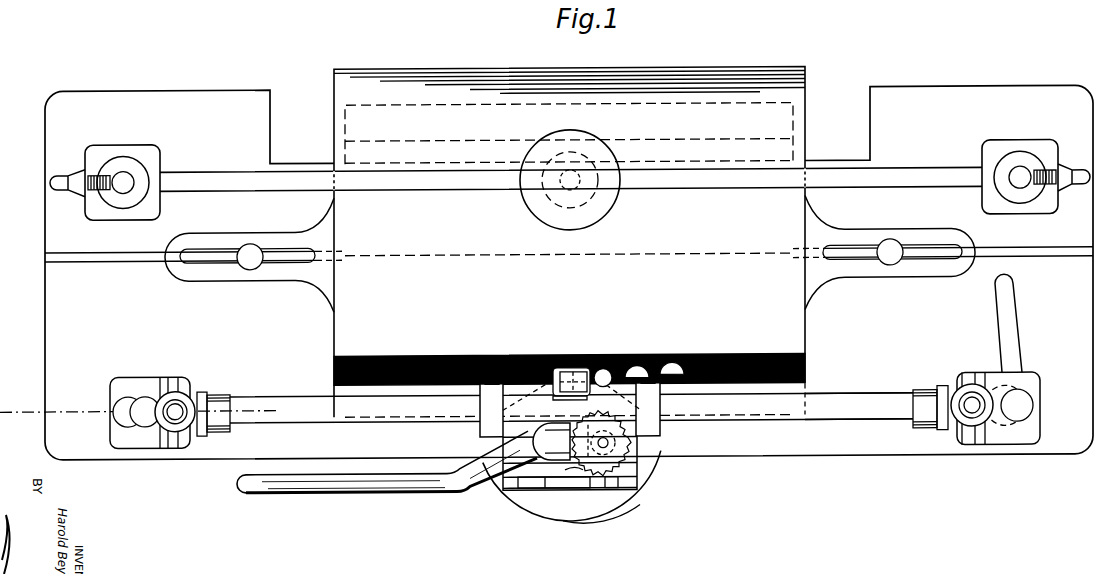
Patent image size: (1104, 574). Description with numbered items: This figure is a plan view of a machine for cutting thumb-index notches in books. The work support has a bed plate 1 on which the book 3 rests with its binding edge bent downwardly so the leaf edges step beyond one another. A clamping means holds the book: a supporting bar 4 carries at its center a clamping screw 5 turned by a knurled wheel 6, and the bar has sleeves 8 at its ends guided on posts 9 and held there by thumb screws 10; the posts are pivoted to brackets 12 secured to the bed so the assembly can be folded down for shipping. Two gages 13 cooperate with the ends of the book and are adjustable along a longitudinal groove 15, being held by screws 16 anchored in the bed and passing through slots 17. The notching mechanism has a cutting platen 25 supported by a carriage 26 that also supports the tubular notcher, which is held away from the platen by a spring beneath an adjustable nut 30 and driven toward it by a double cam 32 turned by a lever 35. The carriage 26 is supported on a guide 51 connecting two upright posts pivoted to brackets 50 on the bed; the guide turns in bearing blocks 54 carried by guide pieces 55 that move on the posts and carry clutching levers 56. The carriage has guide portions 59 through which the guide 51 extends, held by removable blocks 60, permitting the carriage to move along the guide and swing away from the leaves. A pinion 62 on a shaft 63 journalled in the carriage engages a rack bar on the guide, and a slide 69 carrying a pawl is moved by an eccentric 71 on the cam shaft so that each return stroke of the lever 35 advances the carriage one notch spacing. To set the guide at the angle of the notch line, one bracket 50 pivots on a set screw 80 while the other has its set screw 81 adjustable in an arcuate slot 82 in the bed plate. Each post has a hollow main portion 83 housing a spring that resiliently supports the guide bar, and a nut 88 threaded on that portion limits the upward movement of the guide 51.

The bed plate 1 is at (892, 458).
The book 3 is at (455, 68).
The supporting bar 4 is at (425, 190).
The clamping screw 5 is at (600, 188).
The knurled wheel 6 is at (548, 205).
The sleeves 8 is at (127, 165).
The posts 9 is at (125, 192).
The thumb screws 10 is at (58, 186).
The brackets 12 is at (160, 205).
The gages 13 is at (312, 282).
The groove 15 is at (110, 262).
The screws 16 is at (250, 268).
The slots 17 is at (203, 263).
The cutting platen 25 is at (606, 515).
The carriage 26 is at (632, 470).
The adjustable nut 30 is at (605, 370).
The double cam 32 is at (575, 368).
The lever 35 is at (400, 493).
The brackets 50 is at (150, 446).
The guide 51 is at (836, 422).
The bearing blocks 54 is at (222, 394).
The guide pieces 55 is at (205, 392).
The clutching levers 56 is at (150, 392).
The guide portions 59 is at (500, 420).
The removable blocks 60 is at (478, 395).
The pinion 62 is at (635, 440).
The shaft 63 is at (600, 448).
The slide 69 is at (625, 508).
The eccentric 71 is at (580, 488).
The set screw 80 is at (128, 426).
The set screw 81 is at (1031, 408).
The arcuate slot 82 is at (1015, 340).
The main portion 83 is at (175, 404).
The nut 88 is at (178, 432).